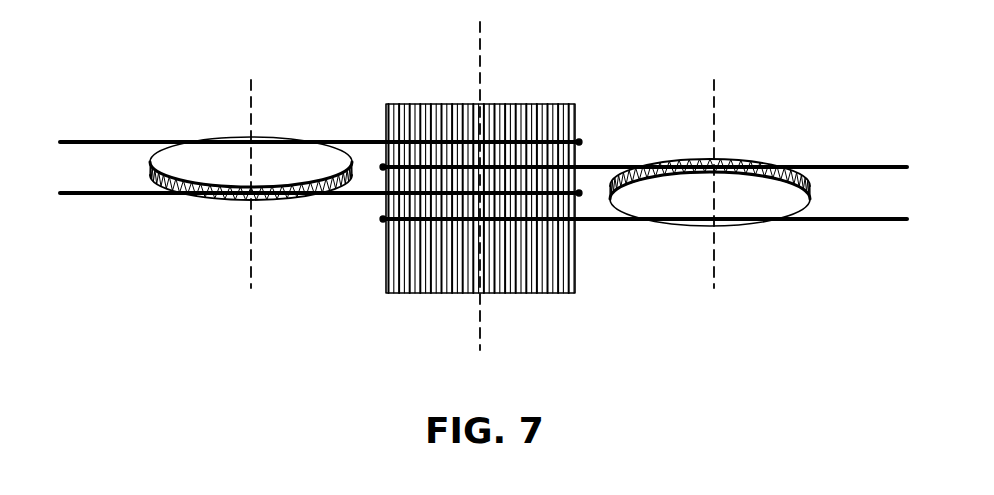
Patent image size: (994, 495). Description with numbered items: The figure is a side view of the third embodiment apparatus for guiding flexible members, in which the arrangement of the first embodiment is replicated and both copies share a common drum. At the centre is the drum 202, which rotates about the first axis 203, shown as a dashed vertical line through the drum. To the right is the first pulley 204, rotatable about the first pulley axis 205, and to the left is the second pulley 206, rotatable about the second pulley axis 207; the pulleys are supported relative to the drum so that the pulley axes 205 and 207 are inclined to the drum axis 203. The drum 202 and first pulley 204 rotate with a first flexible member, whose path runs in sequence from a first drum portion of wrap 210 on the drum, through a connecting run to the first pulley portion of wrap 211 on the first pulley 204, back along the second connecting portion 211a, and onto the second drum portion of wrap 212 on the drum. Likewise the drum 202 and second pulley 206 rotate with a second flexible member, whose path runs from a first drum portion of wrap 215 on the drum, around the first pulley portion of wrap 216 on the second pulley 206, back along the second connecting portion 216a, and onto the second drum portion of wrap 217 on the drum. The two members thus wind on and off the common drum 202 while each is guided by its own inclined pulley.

The drum 202 is at (437, 115).
The first axis 203 is at (481, 42).
The first pulley 204 is at (731, 176).
The first pulley axis 205 is at (715, 99).
The second pulley 206 is at (218, 182).
The second pulley axis 207 is at (252, 99).
The first drum portion of wrap 210 is at (528, 170).
The first pulley portion of wrap 211 is at (812, 195).
The second connecting portion 211a is at (602, 165).
The second drum portion of wrap 212 is at (527, 217).
The first drum portion of wrap 215 is at (433, 130).
The first pulley portion of wrap 216 is at (152, 168).
The second connecting portion 216a is at (347, 193).
The second drum portion of wrap 217 is at (468, 190).